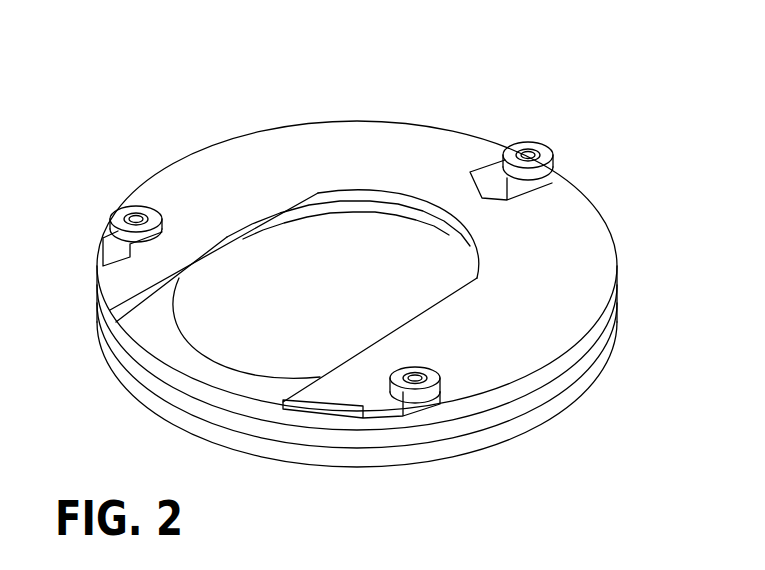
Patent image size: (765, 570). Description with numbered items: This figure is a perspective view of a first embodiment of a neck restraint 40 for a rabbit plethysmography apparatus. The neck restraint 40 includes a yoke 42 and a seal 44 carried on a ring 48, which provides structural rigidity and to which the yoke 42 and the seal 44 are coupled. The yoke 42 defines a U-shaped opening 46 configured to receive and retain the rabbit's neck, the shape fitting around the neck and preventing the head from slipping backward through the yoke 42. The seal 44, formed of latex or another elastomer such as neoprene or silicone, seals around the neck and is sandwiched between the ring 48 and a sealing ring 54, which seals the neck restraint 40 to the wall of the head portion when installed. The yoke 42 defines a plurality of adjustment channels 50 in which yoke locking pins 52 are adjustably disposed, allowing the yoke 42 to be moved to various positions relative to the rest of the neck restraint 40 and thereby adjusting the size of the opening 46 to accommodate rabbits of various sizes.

The neck restraint 40 is at (560, 72).
The yoke 42 is at (594, 222).
The seal 44 is at (291, 285).
The opening 46 is at (388, 202).
The ring 48 is at (380, 445).
The adjustment channels 50 is at (103, 258).
The yoke locking pins 52 is at (135, 208).
The sealing ring 54 is at (511, 435).